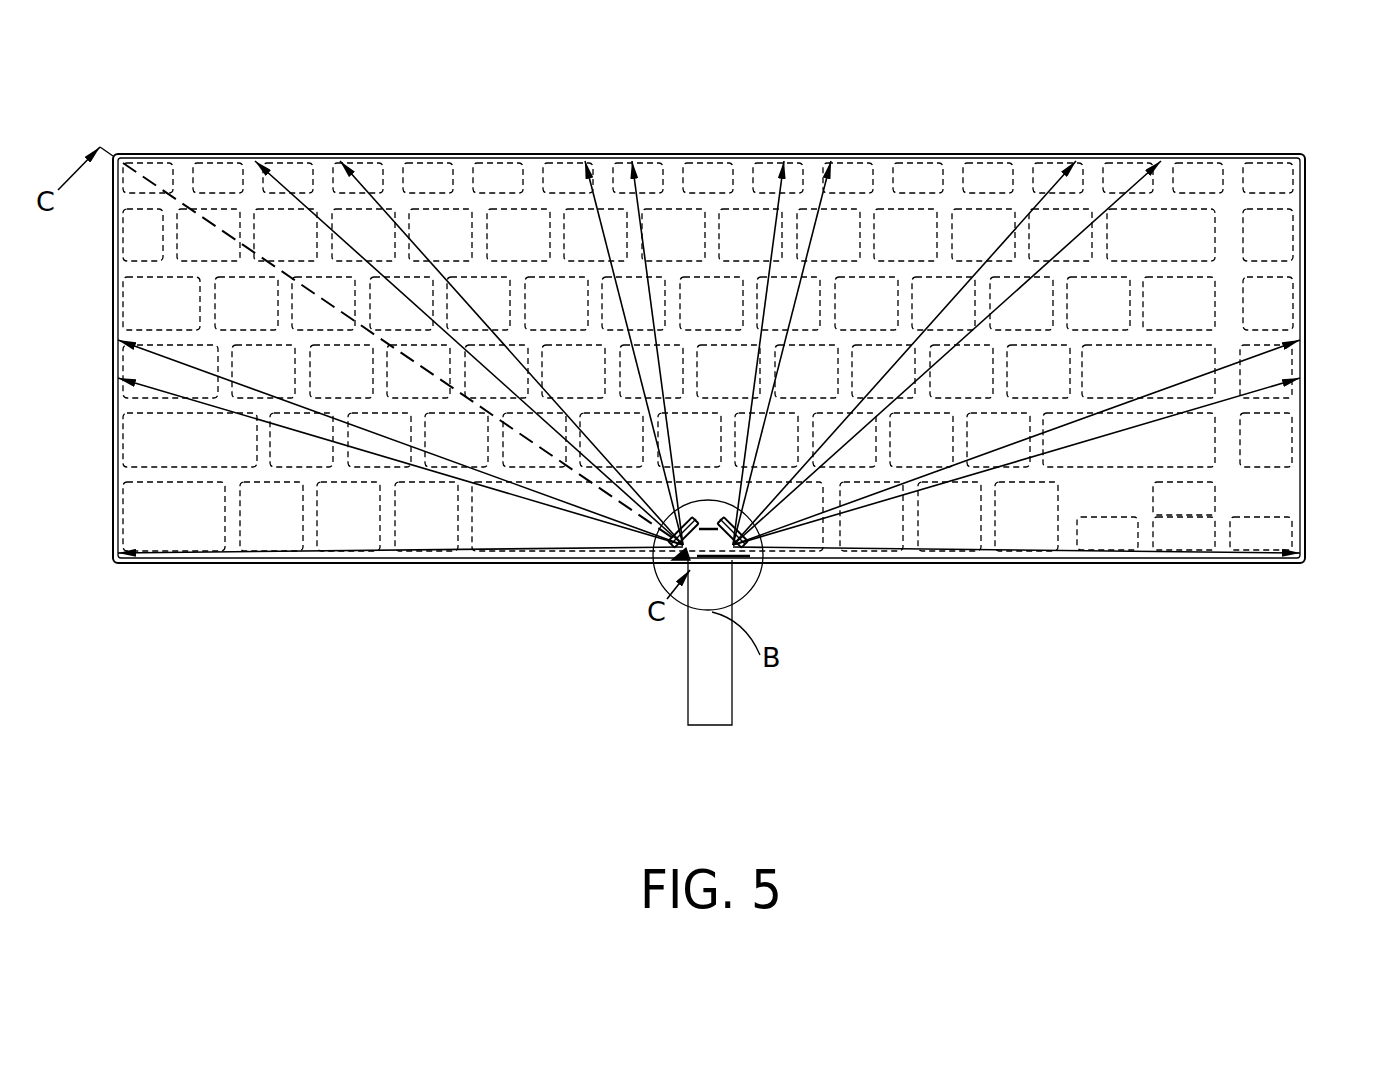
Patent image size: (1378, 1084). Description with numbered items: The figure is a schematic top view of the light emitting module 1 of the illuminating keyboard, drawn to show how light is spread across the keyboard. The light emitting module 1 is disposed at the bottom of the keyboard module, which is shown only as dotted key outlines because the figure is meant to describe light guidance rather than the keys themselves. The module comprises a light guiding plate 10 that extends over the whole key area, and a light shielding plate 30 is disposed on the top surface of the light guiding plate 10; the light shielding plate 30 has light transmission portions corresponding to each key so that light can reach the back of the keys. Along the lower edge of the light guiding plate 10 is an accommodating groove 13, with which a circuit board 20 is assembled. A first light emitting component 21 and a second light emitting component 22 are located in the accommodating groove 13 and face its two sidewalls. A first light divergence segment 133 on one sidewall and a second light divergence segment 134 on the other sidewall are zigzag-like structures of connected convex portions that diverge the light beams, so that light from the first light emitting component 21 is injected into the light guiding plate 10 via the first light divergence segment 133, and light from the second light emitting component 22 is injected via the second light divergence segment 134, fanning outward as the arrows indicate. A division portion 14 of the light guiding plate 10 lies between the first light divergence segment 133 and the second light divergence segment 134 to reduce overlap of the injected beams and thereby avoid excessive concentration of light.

The light emitting module 1 is at (168, 126).
The light guiding plate 10 is at (358, 563).
The accommodating groove 13 is at (757, 577).
The division portion 14 is at (709, 526).
The circuit board 20 is at (704, 680).
The first light emitting component 21 is at (660, 578).
The second light emitting component 22 is at (747, 583).
The light shielding plate 30 is at (1297, 189).
The first light divergence segment 133 is at (668, 528).
The second light divergence segment 134 is at (748, 528).